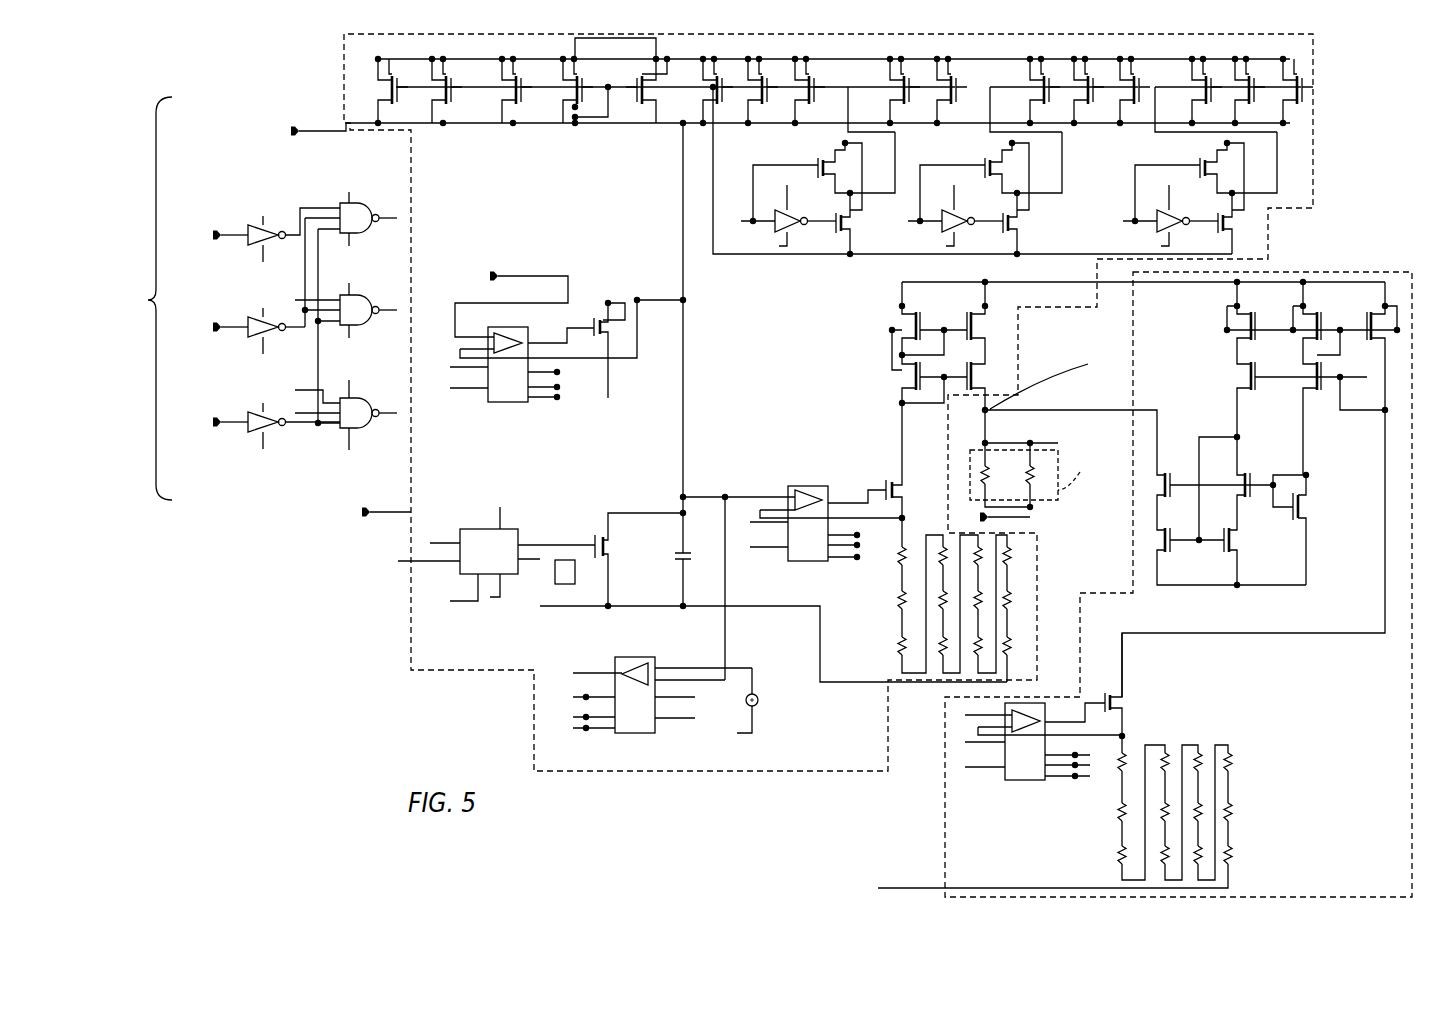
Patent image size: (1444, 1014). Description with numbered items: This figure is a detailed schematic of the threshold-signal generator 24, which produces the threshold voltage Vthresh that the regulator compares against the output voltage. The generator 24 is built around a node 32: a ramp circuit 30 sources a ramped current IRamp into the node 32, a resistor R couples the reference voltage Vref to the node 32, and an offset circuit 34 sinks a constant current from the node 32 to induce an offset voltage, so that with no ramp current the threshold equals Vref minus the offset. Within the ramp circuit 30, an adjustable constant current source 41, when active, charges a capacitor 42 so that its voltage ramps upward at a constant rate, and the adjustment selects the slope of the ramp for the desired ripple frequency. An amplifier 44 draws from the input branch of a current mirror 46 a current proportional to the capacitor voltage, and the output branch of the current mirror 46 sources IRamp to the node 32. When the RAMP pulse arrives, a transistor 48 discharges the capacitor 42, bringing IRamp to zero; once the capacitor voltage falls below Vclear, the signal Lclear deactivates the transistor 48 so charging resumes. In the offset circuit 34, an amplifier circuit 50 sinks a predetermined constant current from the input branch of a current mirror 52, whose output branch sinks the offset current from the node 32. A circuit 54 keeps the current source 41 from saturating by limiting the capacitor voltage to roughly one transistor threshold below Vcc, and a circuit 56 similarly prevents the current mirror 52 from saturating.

The threshold-signal generator 24 is at (246, 680).
The ramp circuit 30 is at (710, 776).
The node 32 is at (1052, 443).
The offset circuit 34 is at (1412, 686).
The constant current source 41 is at (618, 178).
The capacitor 42 is at (675, 558).
The amplifier 44 is at (812, 483).
The current mirror 46 is at (872, 283).
The transistor 48 is at (594, 520).
The amplifier circuit 50 is at (1175, 690).
The current mirror 52 is at (1335, 554).
The circuit 54 is at (506, 406).
The circuit 56 is at (1040, 800).